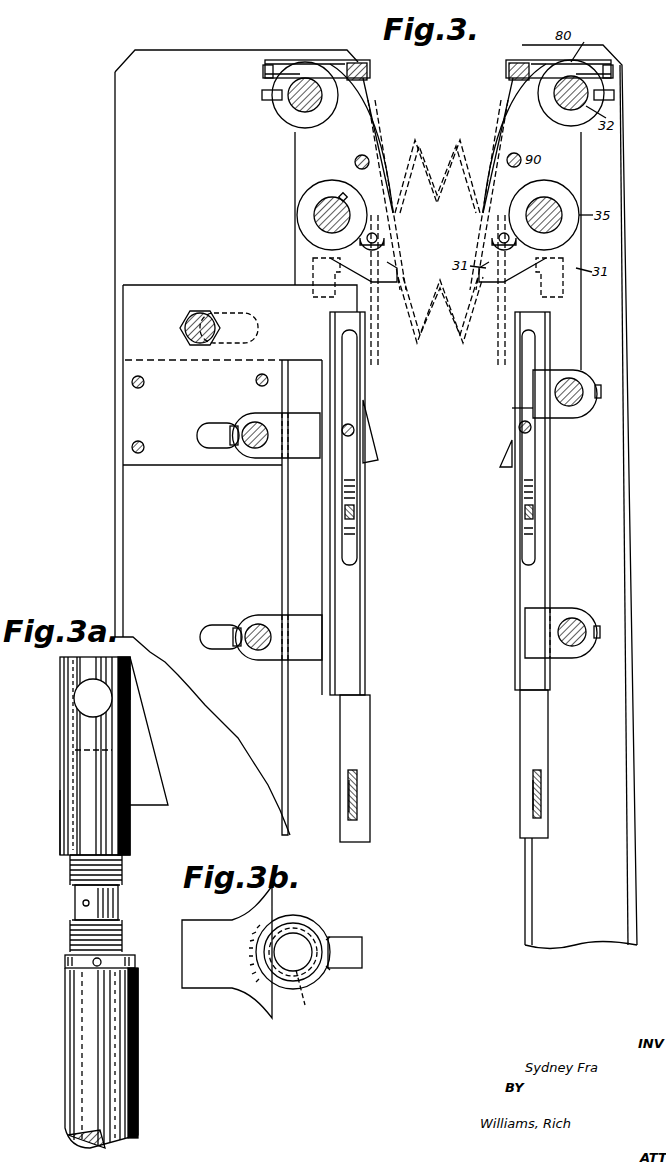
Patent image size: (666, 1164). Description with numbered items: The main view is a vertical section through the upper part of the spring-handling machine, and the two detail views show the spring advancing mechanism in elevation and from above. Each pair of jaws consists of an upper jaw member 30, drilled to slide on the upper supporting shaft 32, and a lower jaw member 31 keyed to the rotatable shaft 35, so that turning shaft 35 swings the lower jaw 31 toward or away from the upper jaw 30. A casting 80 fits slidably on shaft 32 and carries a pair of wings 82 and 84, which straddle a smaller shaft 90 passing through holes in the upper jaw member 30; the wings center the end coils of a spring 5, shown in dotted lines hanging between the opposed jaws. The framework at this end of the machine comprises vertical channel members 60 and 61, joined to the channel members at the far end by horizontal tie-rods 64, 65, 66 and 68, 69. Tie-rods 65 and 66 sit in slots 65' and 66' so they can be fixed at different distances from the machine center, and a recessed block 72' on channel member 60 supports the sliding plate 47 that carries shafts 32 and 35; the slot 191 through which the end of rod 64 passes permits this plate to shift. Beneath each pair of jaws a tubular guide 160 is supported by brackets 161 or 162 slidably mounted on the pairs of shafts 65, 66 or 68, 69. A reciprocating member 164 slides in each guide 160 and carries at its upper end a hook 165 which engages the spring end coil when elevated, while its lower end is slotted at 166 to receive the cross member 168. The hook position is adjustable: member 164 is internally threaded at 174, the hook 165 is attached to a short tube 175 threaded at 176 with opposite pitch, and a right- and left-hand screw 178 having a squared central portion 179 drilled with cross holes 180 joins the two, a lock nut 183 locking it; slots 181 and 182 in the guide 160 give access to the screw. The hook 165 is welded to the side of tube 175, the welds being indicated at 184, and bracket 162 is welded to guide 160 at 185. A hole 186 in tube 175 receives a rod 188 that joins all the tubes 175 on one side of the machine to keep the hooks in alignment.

In FIG. 3, the spring 5 is at (439, 243).
In FIG. 3, the upper jaw member 30 is at (295, 140).
In FIG. 3, the lower jaw member 31 is at (313, 266).
In FIG. 3, the upper supporting shaft 32 is at (290, 106).
In FIG. 3, the rotatable shaft 35 is at (297, 215).
In FIG. 3, the frame plate 47 is at (115, 112).
In FIG. 3, the channel member 60 is at (123, 490).
In FIG. 3, the channel member 61 is at (625, 492).
In FIG. 3, the tie-rod 64 is at (186, 330).
In FIG. 3, the tie-rod 65 is at (276, 422).
In FIG. 3, the slot 65' is at (207, 431).
In FIG. 3, the tie-rod 66 is at (279, 649).
In FIG. 3, the slot 66' is at (220, 623).
In FIG. 3, the tie-rod 68 is at (572, 405).
In FIG. 3, the tie-rod 69 is at (582, 624).
In FIG. 3, the recessed block 72' is at (217, 322).
In FIG. 3, the casting 80 is at (292, 62).
In FIG. 3, the wing 82 is at (506, 98).
In FIG. 3, the wing 84 is at (370, 100).
In FIG. 3, the smaller shaft 90 is at (352, 159).
In FIG. 3, the tubular guide 160 is at (365, 600).
In FIG. 3B, the tubular guide 160 is at (302, 916).
In FIG. 3, the bracket 161 is at (550, 370).
In FIG. 3, the bracket 162 is at (296, 420).
In FIG. 3B, the bracket 162 is at (262, 1010).
In FIG. 3, the reciprocating member 164 is at (370, 738).
In FIG. 3A, the reciprocating member 164 is at (138, 1040).
In FIG. 3, the hook 165 is at (372, 452).
In FIG. 3A, the hook 165 is at (148, 760).
In FIG. 3B, the hook 165 is at (362, 952).
In FIG. 3, the slot 166 is at (357, 795).
In FIG. 3, the cross member 168 is at (349, 808).
In FIG. 3A, the internal thread 174 is at (67, 1022).
In FIG. 3A, the short piece of tubing 175 is at (62, 721).
In FIG. 3B, the short piece of tubing 175 is at (312, 932).
In FIG. 3A, the thread 176 is at (63, 808).
In FIG. 3, the right and left-hand screw 178 is at (345, 512).
In FIG. 3A, the right and left-hand screw 178 is at (70, 870).
In FIG. 3A, the squared central portion 179 is at (75, 893).
In FIG. 3A, the cross holes 180 is at (84, 905).
In FIG. 3, the slot 181 is at (342, 487).
In FIG. 3, the slot 182 is at (344, 538).
In FIG. 3A, the lock nut 183 is at (65, 962).
In FIG. 3A, the shoulder 184 is at (132, 690).
In FIG. 3B, the shoulder 184 is at (330, 935).
In FIG. 3B, the weld 185 is at (253, 970).
In FIG. 3A, the hole 186 is at (78, 690).
In FIG. 3B, the hole 186 is at (298, 976).
In FIG. 3, the rod 188 is at (354, 430).
In FIG. 3, the slot 191 is at (258, 325).